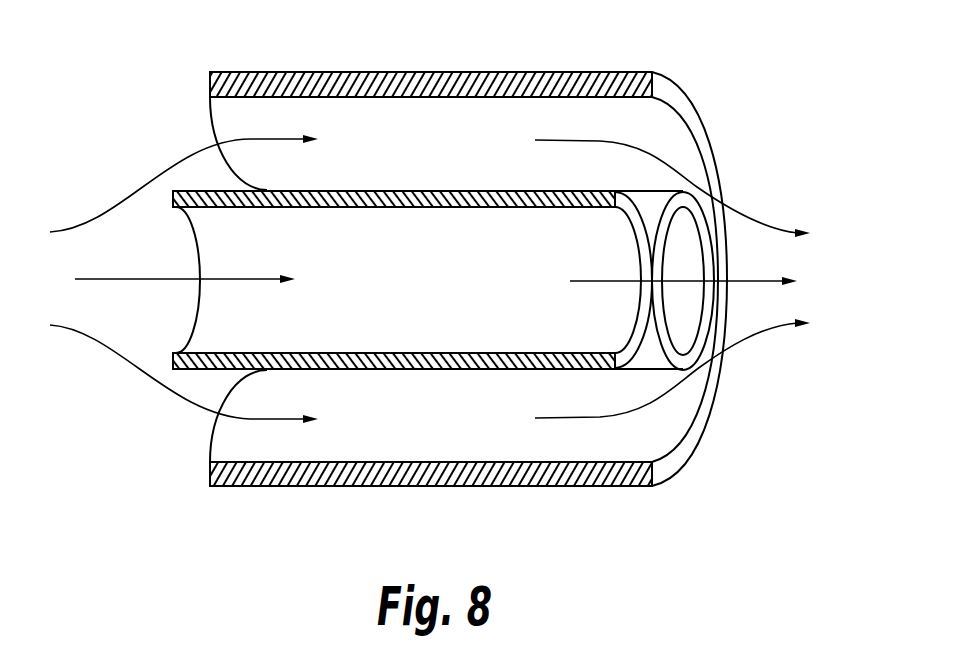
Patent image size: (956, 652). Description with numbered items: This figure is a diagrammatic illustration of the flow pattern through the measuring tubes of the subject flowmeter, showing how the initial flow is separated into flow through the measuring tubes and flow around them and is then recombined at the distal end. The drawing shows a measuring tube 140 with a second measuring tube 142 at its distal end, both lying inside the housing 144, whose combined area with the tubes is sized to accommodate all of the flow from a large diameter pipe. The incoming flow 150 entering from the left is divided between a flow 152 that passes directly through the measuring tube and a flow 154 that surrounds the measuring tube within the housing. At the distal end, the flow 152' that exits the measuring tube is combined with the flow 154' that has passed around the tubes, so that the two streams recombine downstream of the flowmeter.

The measuring tube 140 is at (405, 191).
The measuring tube 142 is at (683, 203).
The housing 144 is at (537, 72).
The incoming flow 150 is at (158, 271).
The flow directly through a measuring tube 152 is at (301, 255).
The exiting tube flow 152' is at (693, 266).
The flow surrounding the measuring tube 154 is at (226, 239).
The exiting surrounding flow 154' is at (679, 279).